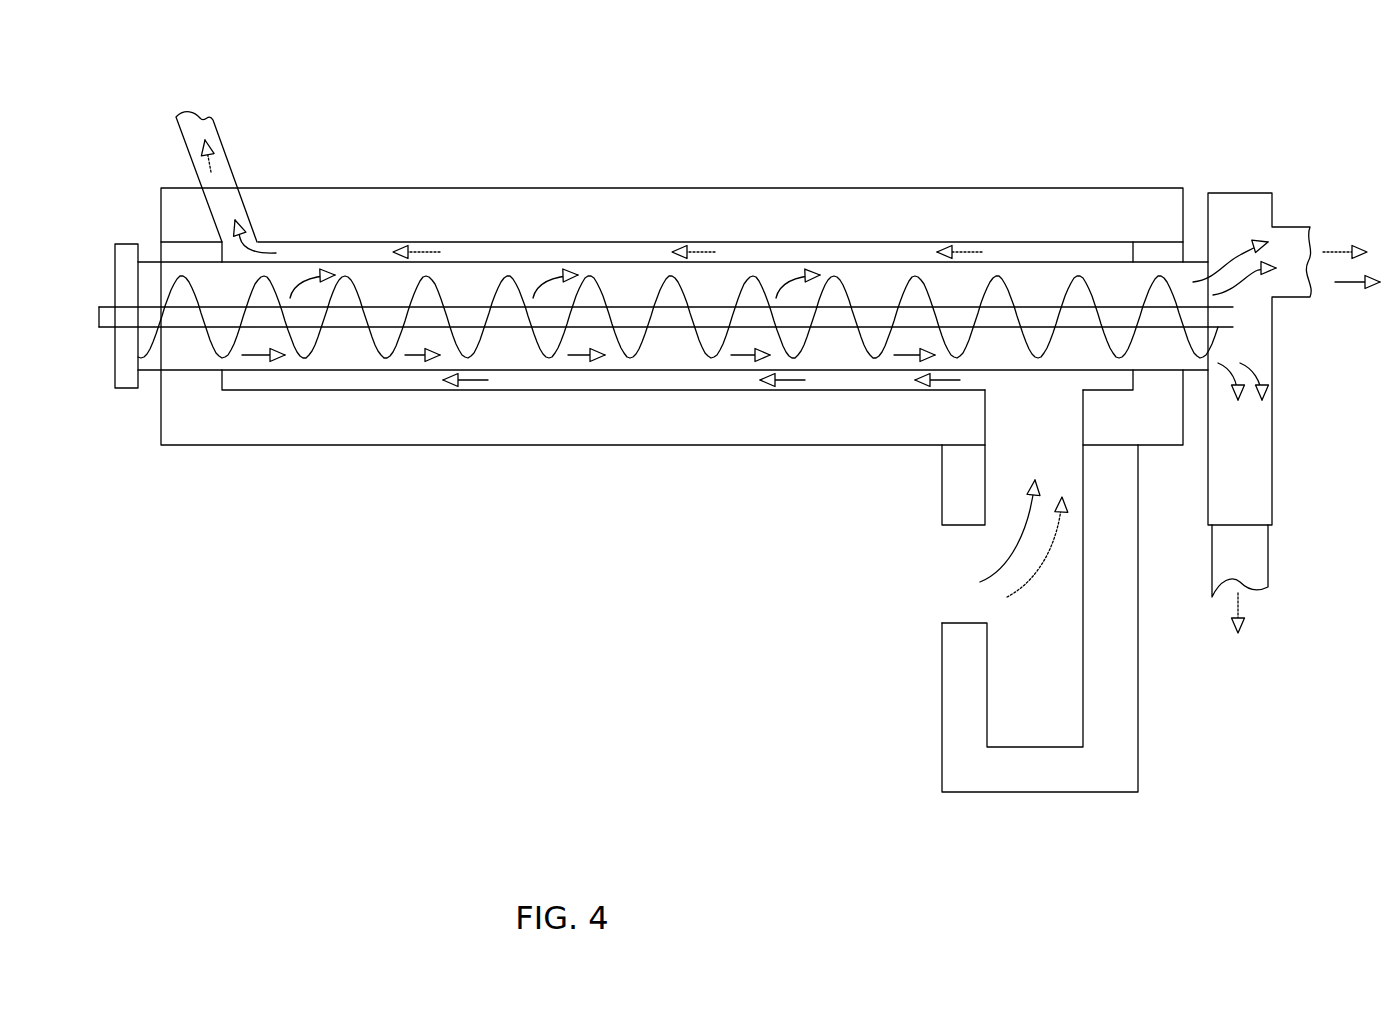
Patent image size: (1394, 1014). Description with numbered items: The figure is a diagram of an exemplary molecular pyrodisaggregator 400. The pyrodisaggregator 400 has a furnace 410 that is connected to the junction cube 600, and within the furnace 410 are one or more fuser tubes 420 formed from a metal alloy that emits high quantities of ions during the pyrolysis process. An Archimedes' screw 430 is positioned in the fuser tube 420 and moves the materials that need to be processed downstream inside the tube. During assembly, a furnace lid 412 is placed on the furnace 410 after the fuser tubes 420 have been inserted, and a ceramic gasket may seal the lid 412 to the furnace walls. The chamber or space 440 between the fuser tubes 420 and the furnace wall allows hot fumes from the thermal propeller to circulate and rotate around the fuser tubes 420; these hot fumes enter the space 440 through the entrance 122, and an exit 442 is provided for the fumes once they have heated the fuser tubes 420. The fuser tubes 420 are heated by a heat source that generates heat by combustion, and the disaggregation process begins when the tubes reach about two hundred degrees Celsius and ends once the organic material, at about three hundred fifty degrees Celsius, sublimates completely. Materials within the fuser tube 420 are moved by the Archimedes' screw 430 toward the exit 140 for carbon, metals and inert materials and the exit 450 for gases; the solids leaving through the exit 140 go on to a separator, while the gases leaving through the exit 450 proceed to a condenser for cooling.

The molecular pyrodisaggregator 400 is at (998, 38).
The furnace 410 is at (247, 428).
The furnace lid 412 is at (310, 200).
The fuser tube 420 is at (390, 278).
The Archimedes' screw 430 is at (476, 318).
The chamber or space 440 is at (632, 253).
The exit for fumes 442 is at (200, 168).
The exit for gases 450 is at (1290, 252).
The exit for carbon-metals-inert materials 140 is at (1257, 562).
The junction cube 600 is at (970, 703).
The entrance 122 is at (943, 567).